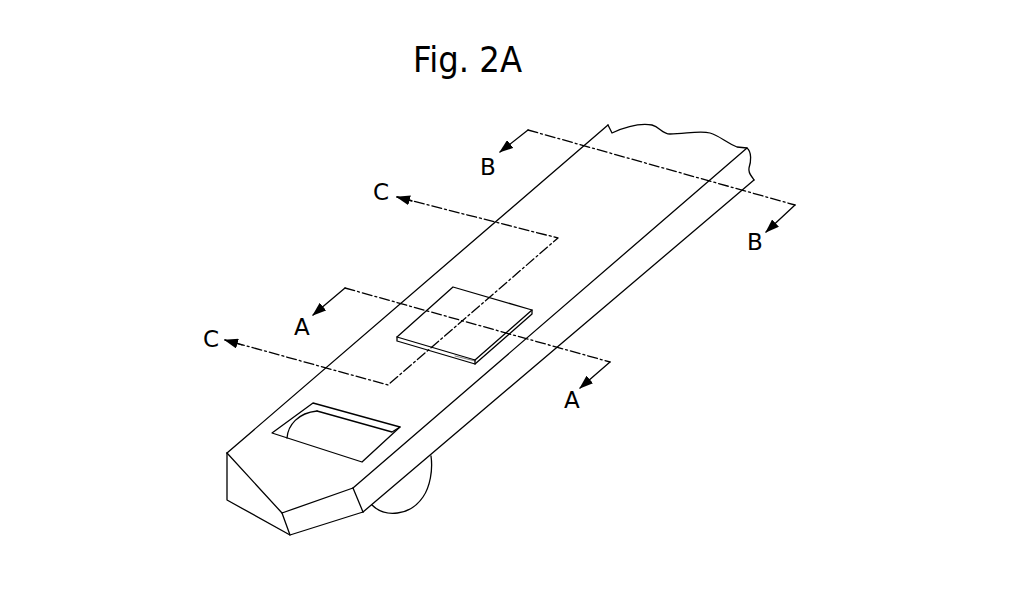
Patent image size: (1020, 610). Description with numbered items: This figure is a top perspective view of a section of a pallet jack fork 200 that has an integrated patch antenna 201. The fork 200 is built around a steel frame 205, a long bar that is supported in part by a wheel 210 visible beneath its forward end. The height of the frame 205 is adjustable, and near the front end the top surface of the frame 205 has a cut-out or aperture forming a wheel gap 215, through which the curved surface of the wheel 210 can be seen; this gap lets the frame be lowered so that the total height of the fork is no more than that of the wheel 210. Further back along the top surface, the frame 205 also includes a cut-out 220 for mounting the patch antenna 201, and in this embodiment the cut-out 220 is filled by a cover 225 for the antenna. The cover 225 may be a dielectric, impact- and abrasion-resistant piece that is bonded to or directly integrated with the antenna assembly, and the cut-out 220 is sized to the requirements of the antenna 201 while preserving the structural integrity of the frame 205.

The pallet jack fork 200 is at (250, 273).
The patch antenna 201 is at (403, 282).
The steel frame 205 is at (232, 478).
The wheel 210 is at (423, 489).
The wheel gap 215 is at (287, 424).
The cut-out 220 is at (458, 354).
The cover 225 is at (512, 310).